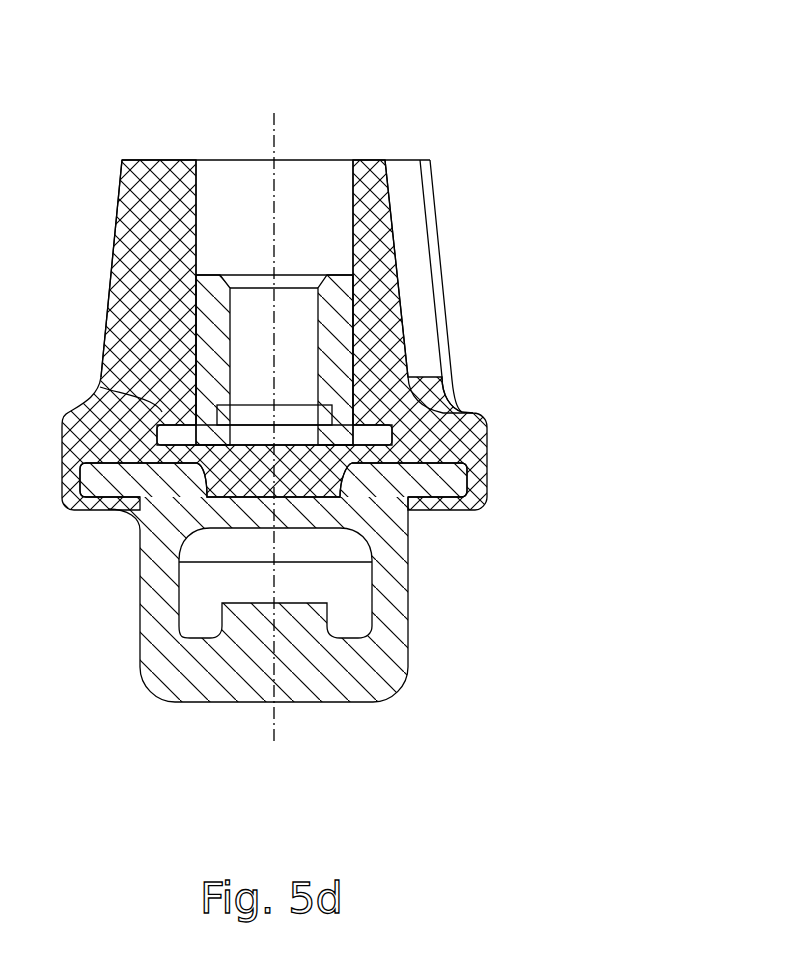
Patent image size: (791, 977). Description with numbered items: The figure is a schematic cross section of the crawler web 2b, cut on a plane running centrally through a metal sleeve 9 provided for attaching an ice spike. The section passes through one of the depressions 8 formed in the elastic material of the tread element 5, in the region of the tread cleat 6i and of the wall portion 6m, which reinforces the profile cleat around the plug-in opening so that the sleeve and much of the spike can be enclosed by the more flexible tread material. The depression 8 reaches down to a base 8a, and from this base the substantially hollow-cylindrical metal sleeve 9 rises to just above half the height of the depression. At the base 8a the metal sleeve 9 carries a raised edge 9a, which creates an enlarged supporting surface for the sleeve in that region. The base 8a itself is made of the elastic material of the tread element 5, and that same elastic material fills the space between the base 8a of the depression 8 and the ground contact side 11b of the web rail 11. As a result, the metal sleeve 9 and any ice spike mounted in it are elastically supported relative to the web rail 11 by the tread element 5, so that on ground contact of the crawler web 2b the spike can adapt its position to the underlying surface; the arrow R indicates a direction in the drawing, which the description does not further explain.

The crawler web 2b is at (160, 112).
The tread element 5 is at (104, 275).
The tread cleat 6i is at (138, 180).
The wall portion 6m is at (373, 190).
The plug-in opening 8 is at (310, 149).
The base 8a is at (413, 508).
The metal sleeve 9 is at (340, 296).
The raised edge 9a is at (100, 388).
The web rail 11 is at (416, 673).
The ground contact side 11b is at (343, 490).
The direction R is at (570, 460).